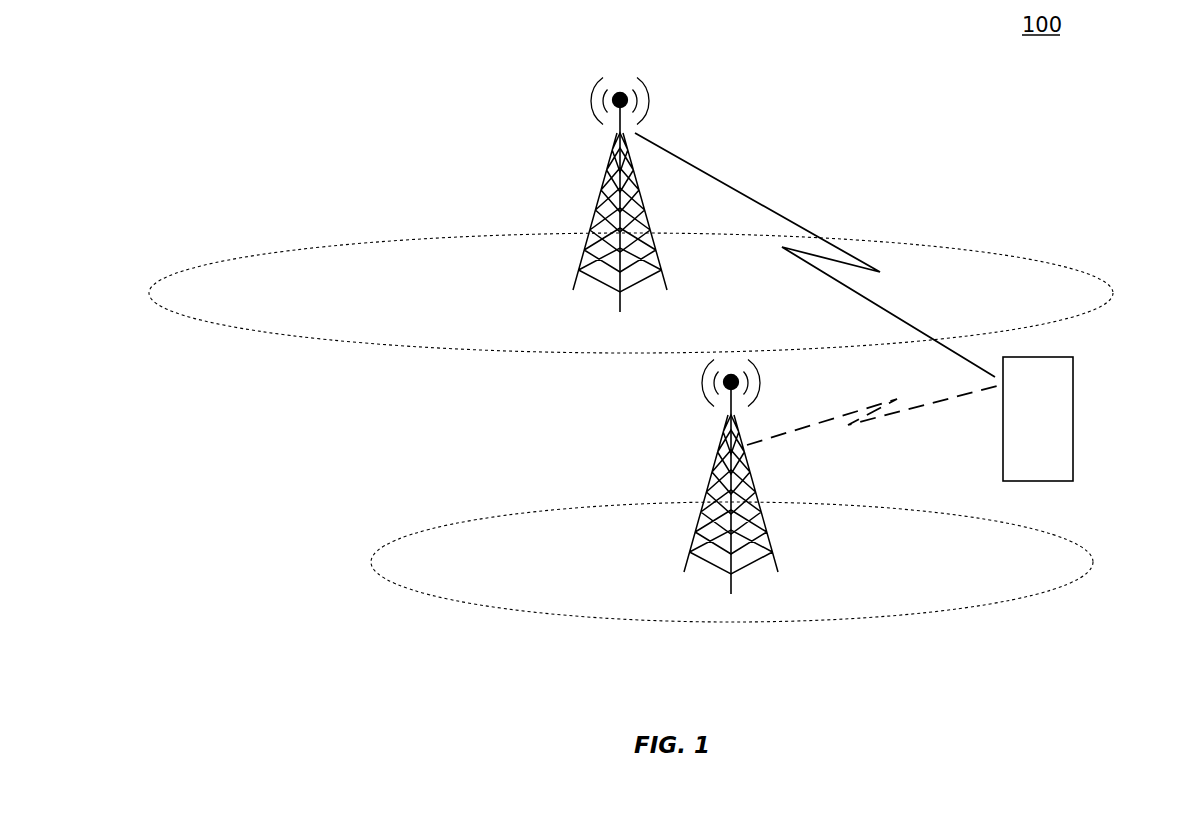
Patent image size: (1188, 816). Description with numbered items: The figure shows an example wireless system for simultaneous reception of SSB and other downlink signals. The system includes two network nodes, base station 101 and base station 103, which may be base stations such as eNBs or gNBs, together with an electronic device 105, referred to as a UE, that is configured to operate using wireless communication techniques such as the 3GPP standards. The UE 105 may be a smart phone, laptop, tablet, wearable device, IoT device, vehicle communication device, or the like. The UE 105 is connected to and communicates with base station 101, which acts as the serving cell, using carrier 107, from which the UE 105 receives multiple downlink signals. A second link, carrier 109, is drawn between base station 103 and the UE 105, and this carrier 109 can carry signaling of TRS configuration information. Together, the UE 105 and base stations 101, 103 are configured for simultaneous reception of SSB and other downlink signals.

The network node 101 is at (607, 192).
The network node 103 is at (705, 476).
The electronic device 105 is at (1073, 372).
The carrier 107 is at (815, 255).
The carrier 109 is at (872, 423).